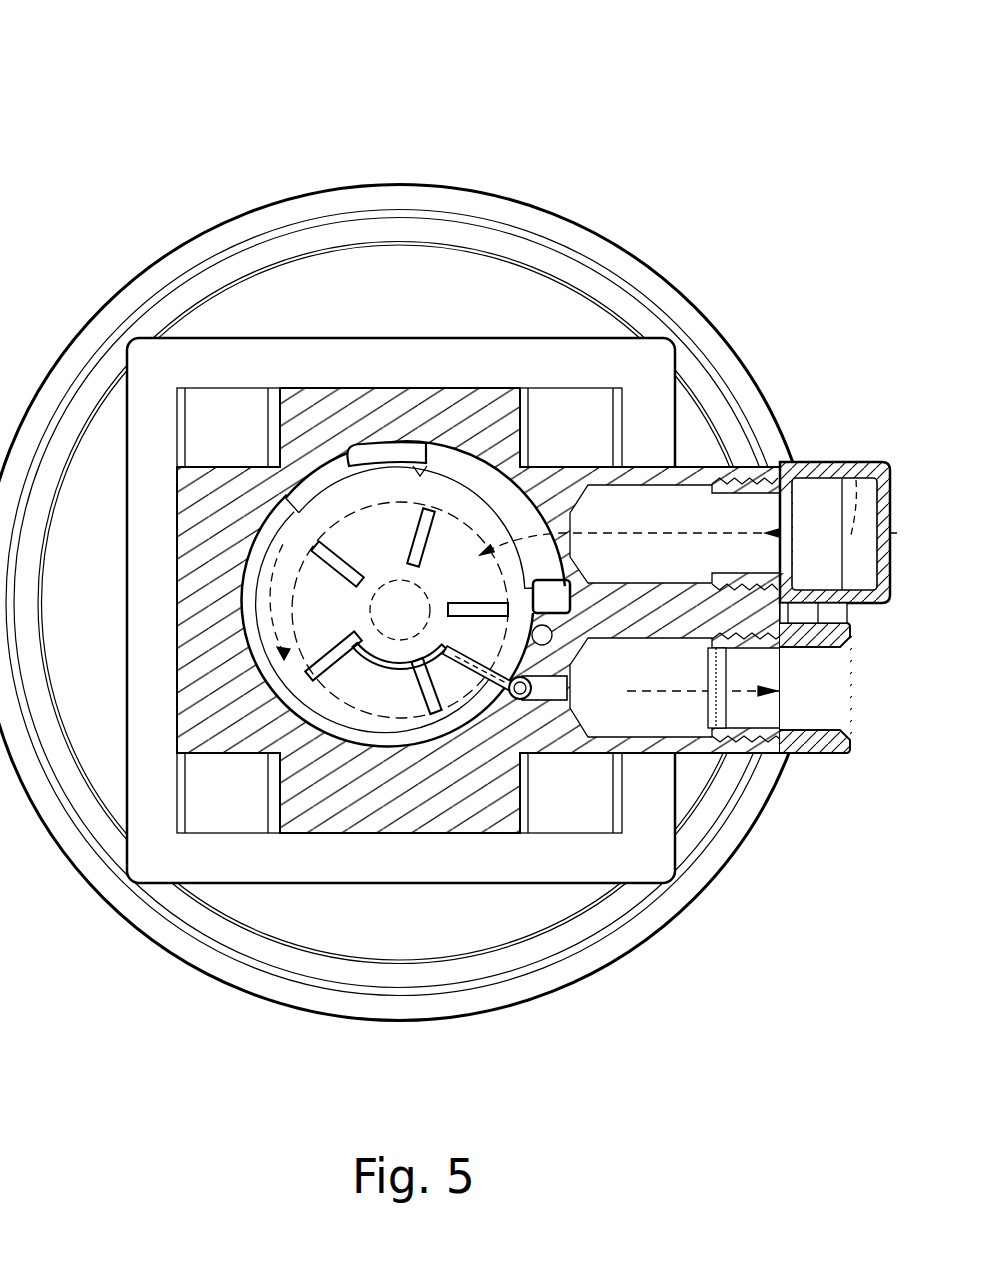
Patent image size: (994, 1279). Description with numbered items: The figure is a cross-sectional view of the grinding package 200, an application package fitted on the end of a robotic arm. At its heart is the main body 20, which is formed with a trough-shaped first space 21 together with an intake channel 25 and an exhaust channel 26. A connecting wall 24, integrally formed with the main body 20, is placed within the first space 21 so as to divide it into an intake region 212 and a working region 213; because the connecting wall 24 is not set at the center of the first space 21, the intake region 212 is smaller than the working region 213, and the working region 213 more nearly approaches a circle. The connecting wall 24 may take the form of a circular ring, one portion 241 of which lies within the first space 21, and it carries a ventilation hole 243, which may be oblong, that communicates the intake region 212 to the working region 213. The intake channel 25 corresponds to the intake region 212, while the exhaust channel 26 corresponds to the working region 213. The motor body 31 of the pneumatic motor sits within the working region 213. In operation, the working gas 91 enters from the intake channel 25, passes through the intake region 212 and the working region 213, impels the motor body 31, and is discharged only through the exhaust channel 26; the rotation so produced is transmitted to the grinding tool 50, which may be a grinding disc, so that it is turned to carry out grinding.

The grinding package 200 is at (860, 48).
The main body 20 is at (345, 815).
The first space 21 is at (738, 193).
The intake region 212 is at (470, 518).
The working region 213 is at (520, 520).
The connecting wall 24 is at (406, 374).
The portion of the connecting wall 241 is at (425, 472).
The ventilation hole 243 is at (433, 475).
The intake channel 25 is at (686, 485).
The exhaust channel 26 is at (677, 722).
The motor body 31 is at (417, 718).
The grinding tool 50 is at (572, 985).
The working gas 91 is at (853, 470).